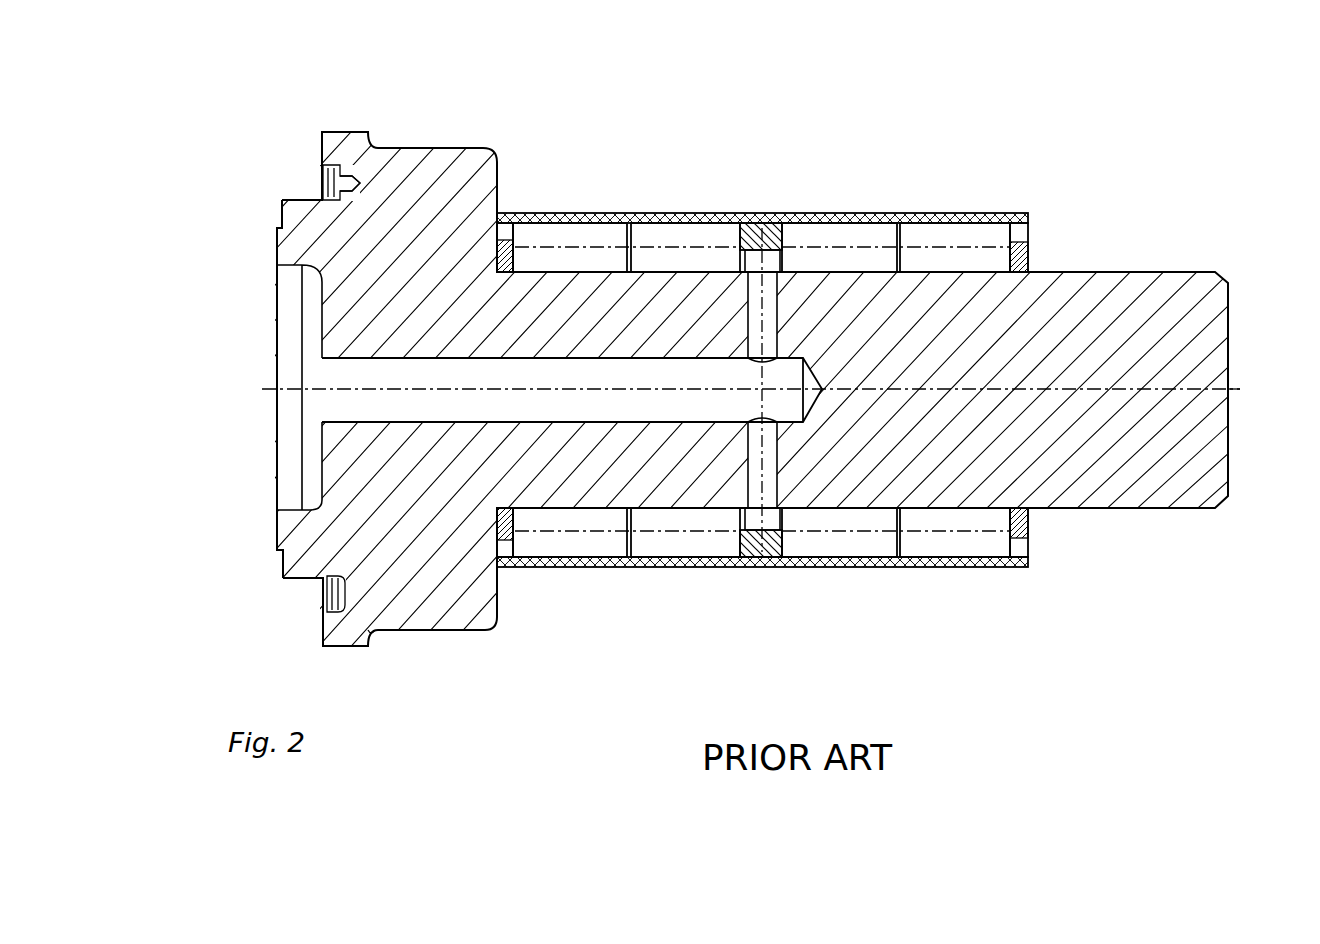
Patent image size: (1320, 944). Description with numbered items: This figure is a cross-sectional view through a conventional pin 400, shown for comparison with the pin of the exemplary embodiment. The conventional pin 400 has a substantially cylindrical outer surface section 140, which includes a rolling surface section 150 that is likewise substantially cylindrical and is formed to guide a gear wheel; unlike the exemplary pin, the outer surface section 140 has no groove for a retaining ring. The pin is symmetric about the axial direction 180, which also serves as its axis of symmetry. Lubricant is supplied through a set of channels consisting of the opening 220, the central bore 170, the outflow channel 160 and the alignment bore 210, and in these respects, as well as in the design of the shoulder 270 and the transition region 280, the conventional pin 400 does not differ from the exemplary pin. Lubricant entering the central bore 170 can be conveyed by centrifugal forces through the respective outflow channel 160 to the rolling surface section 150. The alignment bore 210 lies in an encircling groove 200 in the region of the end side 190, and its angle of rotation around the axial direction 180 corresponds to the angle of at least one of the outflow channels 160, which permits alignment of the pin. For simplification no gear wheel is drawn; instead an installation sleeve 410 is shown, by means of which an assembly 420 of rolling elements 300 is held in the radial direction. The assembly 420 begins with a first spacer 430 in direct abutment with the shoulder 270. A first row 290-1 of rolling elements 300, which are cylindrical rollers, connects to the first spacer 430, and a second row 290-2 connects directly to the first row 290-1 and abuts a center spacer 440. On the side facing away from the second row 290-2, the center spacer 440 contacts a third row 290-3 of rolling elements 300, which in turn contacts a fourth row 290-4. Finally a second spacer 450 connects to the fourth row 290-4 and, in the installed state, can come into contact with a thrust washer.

The outer surface section 140 is at (1105, 271).
The rolling surface section 150 is at (988, 280).
The outflow channel 160 is at (748, 340).
The central bore 170 is at (604, 388).
The axial direction 180 is at (1238, 390).
The end side 190 is at (274, 255).
The encircling groove 200 is at (322, 177).
The alignment bore 210 is at (348, 175).
The opening 220 is at (283, 362).
The shoulder 270 is at (498, 167).
The transition region 280 is at (436, 148).
The first row 290-1 is at (590, 235).
The second row 290-2 is at (692, 235).
The third row 290-3 is at (836, 235).
The fourth row 290-4 is at (945, 235).
The rolling elements 300 is at (610, 548).
The conventional pin 400 is at (861, 368).
The installation sleeve 410 is at (905, 214).
The assembly 420 is at (996, 226).
The first spacer 430 is at (523, 215).
The center spacer 440 is at (770, 232).
The second spacer 450 is at (1028, 247).